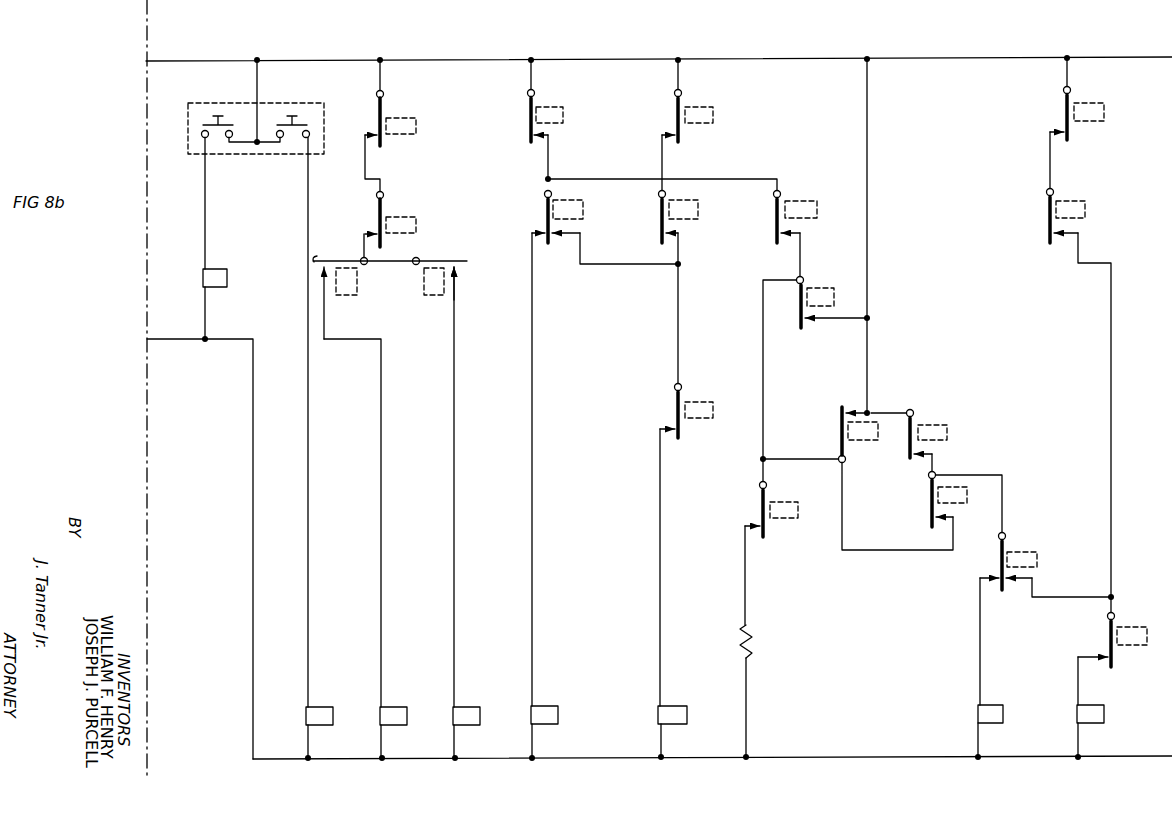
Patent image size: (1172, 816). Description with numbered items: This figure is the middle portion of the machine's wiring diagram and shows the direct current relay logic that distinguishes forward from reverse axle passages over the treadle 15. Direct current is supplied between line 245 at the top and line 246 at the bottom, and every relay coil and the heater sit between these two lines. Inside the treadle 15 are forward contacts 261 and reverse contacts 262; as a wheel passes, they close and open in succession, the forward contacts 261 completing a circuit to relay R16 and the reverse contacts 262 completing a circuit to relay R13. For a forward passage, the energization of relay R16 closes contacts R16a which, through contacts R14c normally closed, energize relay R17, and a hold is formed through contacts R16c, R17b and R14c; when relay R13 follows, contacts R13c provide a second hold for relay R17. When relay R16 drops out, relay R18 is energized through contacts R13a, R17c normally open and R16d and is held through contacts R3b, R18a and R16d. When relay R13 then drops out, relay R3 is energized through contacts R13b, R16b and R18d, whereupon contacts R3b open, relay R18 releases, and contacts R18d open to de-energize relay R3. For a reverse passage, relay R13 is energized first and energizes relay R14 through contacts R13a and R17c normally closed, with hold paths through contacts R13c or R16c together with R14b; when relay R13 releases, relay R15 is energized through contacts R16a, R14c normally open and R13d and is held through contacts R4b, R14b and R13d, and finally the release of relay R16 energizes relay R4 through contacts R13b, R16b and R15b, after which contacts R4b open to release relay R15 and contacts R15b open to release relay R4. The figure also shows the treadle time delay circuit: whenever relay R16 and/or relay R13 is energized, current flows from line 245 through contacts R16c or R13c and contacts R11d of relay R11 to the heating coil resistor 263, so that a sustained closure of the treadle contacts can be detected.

The treadle 15 is at (320, 103).
The line 245 is at (454, 60).
The line 246 is at (603, 758).
The forward contacts 261 is at (217, 140).
The reverse contacts 262 is at (293, 140).
The heating coil resistor 263 is at (752, 641).
The relay R13 is at (398, 118).
The relay R16 is at (398, 217).
The relay R3 is at (697, 107).
The relay R4 is at (1086, 103).
The relay R14 is at (797, 201).
The relay R17 is at (565, 200).
The relay R18 is at (681, 200).
The relay R15 is at (346, 295).
The relay R11 is at (782, 502).
The contacts R13a is at (537, 158).
The contacts R13b is at (382, 144).
The contacts R13c is at (802, 330).
The contacts R13d is at (1105, 652).
The contacts R16a is at (912, 460).
The contacts R16b is at (382, 245).
The contacts R16c is at (846, 405).
The contacts R16d is at (690, 425).
The contacts R3b is at (676, 144).
The contacts R4b is at (1065, 142).
The contacts R14b is at (779, 245).
The contacts R14c is at (1004, 592).
The contacts R17b is at (934, 529).
The contacts R17c is at (545, 228).
The contacts R18a is at (664, 245).
The contacts R18d is at (463, 263).
The contacts R15b is at (390, 250).
The contacts R11d is at (764, 538).